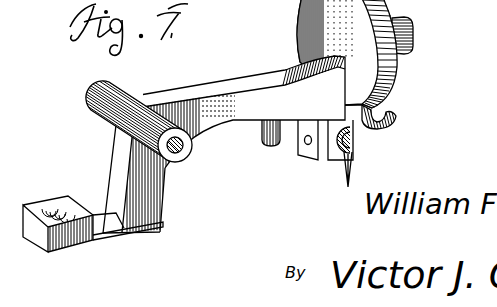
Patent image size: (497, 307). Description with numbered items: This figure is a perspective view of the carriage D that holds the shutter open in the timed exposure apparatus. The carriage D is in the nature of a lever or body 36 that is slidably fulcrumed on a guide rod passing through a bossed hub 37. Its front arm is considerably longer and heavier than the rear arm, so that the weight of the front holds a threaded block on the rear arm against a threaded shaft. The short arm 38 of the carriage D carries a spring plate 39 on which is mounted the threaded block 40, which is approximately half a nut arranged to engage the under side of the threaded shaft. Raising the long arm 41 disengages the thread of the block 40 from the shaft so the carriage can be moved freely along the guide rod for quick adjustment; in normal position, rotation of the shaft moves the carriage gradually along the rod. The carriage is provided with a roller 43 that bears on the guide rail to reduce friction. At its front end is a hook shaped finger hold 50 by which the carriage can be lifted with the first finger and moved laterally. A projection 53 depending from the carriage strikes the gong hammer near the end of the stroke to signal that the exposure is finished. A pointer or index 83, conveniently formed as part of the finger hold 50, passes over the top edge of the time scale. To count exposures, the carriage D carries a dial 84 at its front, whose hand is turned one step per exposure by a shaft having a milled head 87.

The carriage D is at (136, 86).
The lever or body 36 is at (238, 100).
The bossed hub 37 is at (191, 156).
The short arm 38 is at (163, 203).
The spring plate 39 is at (105, 228).
The threaded block 40 is at (50, 205).
The long arm 41 is at (261, 92).
The roller 43 is at (333, 158).
The hook shaped finger hold 50 is at (387, 116).
The projection 53 is at (271, 148).
The pointer or index 83 is at (357, 170).
The dial 84 is at (404, 66).
The milled head 87 is at (414, 43).